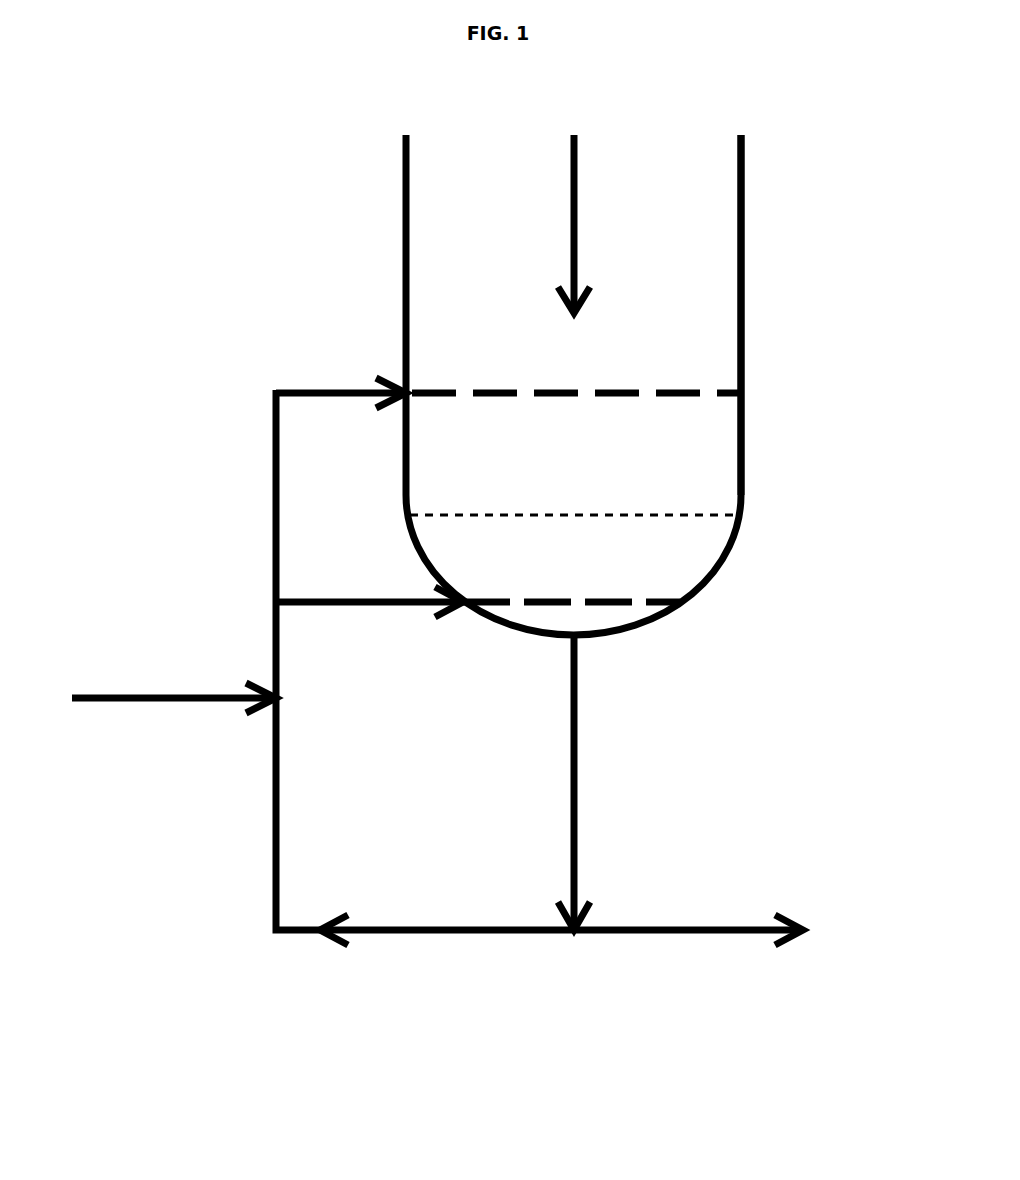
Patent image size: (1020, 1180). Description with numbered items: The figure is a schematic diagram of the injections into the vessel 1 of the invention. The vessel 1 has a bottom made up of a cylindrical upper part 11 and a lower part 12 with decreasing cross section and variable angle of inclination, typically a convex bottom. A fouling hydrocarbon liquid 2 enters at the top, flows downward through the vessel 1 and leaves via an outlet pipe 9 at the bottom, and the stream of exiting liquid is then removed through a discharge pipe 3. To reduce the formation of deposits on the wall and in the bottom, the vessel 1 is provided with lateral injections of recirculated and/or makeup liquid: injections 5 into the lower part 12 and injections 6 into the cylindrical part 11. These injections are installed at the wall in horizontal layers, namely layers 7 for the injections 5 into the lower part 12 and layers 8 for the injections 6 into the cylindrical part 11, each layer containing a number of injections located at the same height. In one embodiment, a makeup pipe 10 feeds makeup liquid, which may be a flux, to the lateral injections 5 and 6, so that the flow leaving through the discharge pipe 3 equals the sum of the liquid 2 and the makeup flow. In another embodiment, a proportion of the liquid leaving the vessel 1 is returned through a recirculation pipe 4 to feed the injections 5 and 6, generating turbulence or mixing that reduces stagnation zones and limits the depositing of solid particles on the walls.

The vessel 1 is at (782, 299).
The hydrocarbon liquid 2 is at (577, 255).
The discharge pipe 3 is at (607, 935).
The recirculation pipe 4 is at (350, 938).
The injections into the lower part 5 is at (307, 607).
The injections into the cylindrical part 6 is at (313, 388).
The horizontal layers of injections in the lower part 7 is at (636, 600).
The horizontal layers of injections in the cylindrical part 8 is at (702, 391).
The outlet pipe 9 is at (580, 706).
The makeup pipe 10 is at (203, 690).
The cylindrical upper part 11 is at (743, 352).
The lower part with decreasing cross section 12 is at (734, 546).